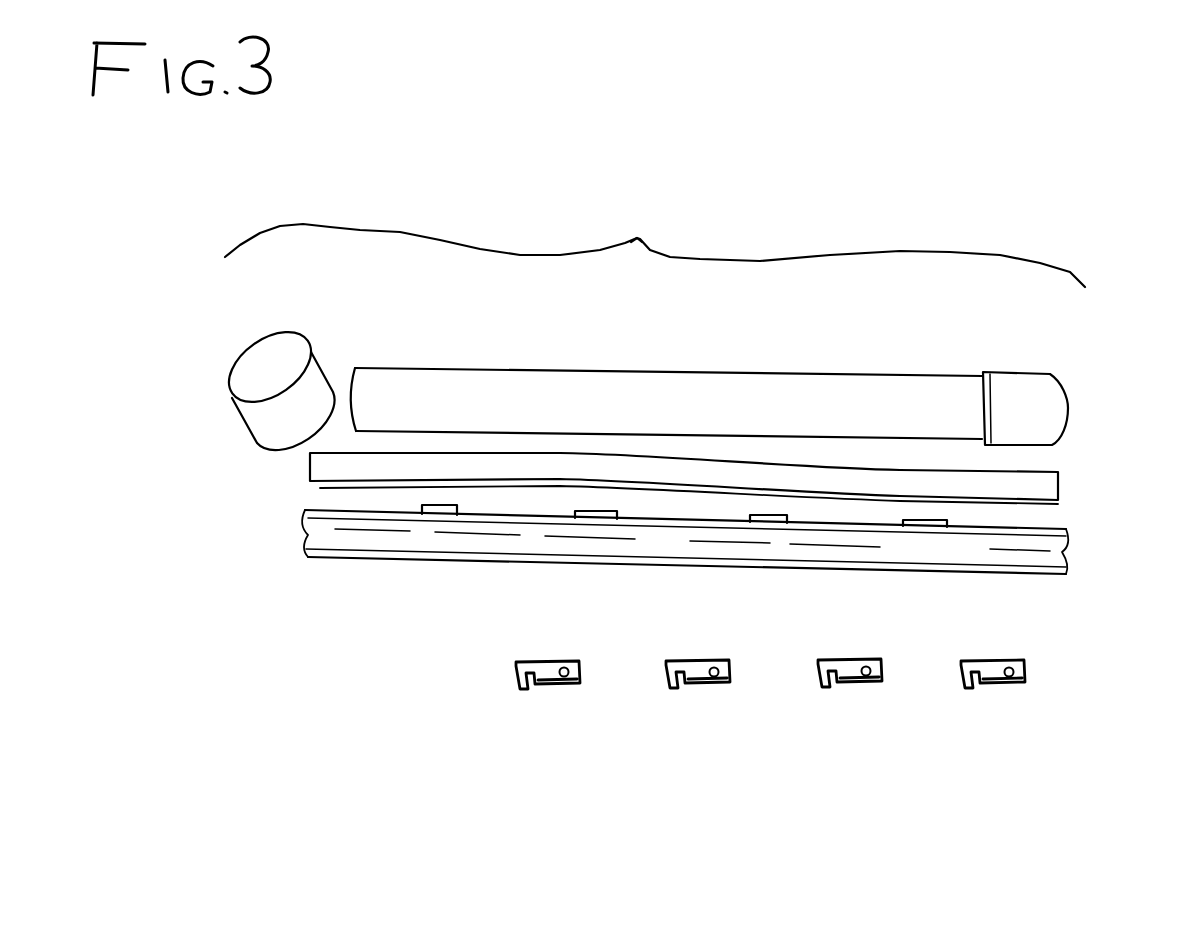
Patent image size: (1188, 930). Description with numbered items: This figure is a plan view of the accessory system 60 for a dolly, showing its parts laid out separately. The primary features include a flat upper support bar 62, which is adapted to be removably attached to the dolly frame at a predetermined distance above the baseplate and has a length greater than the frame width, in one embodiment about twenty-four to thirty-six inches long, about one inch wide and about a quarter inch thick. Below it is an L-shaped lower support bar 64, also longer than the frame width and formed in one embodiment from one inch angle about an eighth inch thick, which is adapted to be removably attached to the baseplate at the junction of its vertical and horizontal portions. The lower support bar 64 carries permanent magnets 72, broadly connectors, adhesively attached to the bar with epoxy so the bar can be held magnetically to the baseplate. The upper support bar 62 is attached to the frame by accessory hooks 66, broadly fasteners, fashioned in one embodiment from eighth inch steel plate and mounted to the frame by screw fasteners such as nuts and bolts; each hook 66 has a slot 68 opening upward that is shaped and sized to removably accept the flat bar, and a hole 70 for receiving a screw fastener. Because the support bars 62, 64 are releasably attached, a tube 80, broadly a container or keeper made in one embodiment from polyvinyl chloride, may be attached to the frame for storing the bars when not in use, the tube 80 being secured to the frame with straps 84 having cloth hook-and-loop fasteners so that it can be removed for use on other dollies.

The accessory system 60 is at (655, 241).
The flat upper support bar 62 is at (1058, 482).
The L-shaped lower support bar 64 is at (1066, 558).
The accessory hook 66 is at (565, 690).
The slot 68 is at (530, 690).
The hole 70 is at (576, 668).
The permanent magnet 72 is at (437, 505).
The tube 80 is at (740, 368).
The strap 84 is at (306, 356).